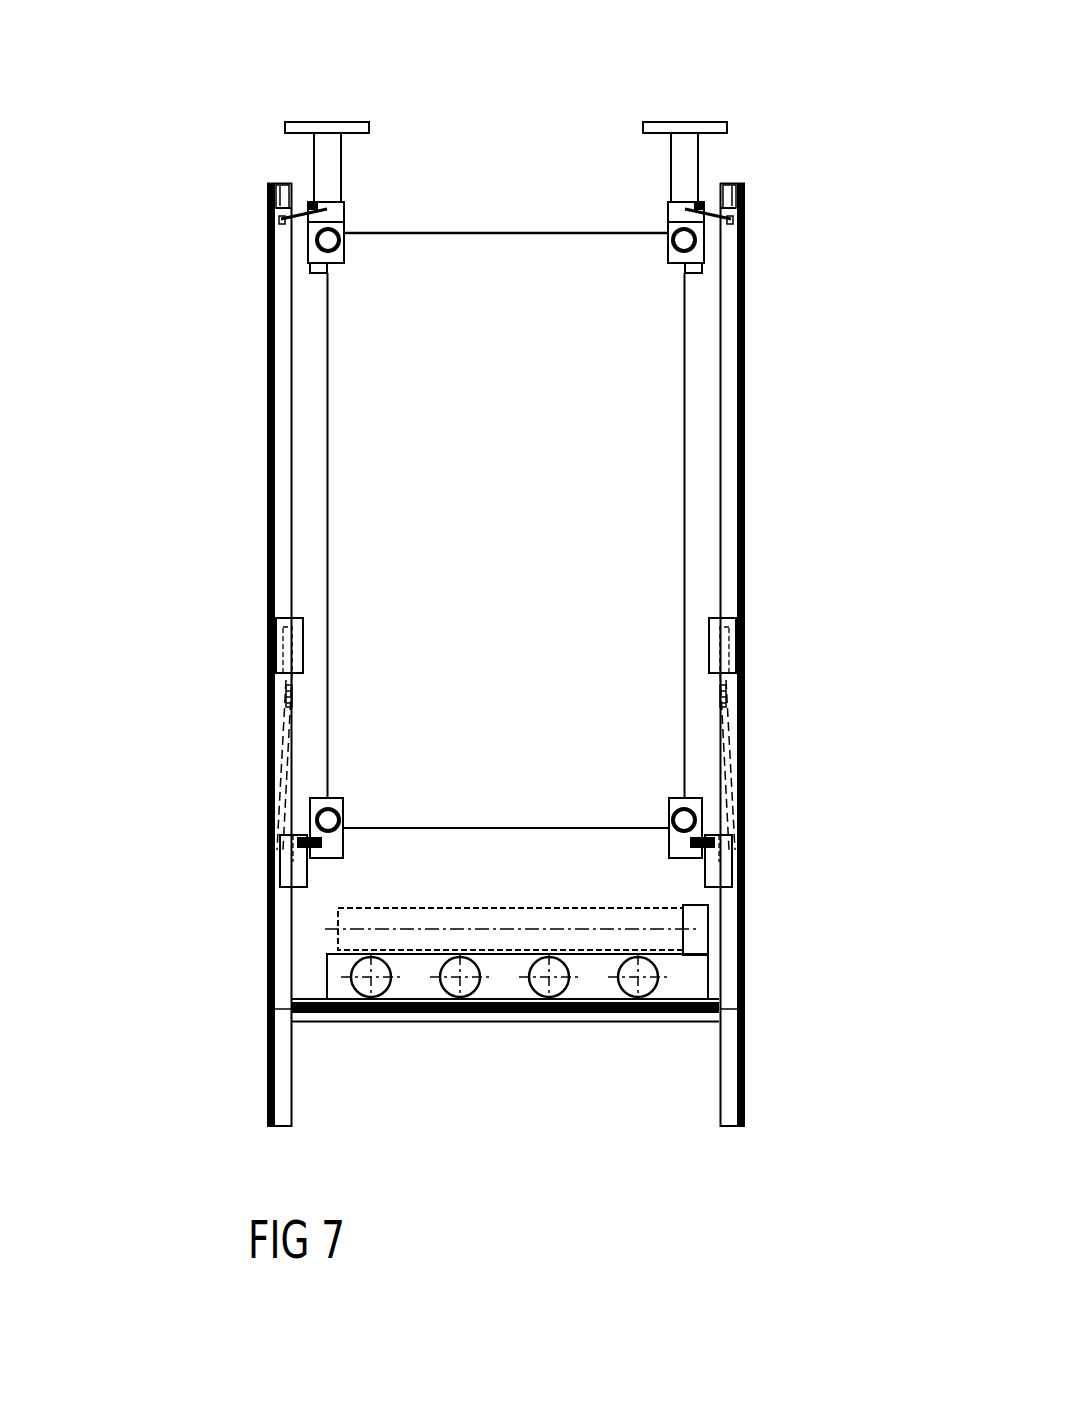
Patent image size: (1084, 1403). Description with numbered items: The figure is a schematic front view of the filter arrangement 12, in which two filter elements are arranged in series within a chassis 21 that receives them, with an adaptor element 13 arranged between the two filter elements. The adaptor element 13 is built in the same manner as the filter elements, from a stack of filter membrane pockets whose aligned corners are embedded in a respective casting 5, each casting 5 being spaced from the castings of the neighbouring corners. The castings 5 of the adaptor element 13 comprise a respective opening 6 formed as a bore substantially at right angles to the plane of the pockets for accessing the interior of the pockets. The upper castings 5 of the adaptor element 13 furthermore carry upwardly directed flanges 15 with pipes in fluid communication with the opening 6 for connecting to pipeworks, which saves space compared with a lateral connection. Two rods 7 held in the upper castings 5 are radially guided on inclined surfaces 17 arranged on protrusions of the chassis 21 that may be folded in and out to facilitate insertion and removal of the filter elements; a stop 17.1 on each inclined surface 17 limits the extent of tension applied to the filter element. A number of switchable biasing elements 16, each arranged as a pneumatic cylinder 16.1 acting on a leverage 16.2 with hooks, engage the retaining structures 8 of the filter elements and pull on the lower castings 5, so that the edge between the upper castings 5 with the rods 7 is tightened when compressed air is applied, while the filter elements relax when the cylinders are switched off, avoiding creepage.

The filter arrangement 12 is at (262, 106).
The adaptor element 13 is at (528, 226).
The upwardly directed flange 15 is at (333, 157).
The casting 5 is at (344, 262).
The opening 6 is at (322, 242).
The rod 7 is at (320, 207).
The retaining structure 8 is at (320, 843).
The inclined surface 17 is at (283, 220).
The stop 17.1 is at (303, 207).
The chassis 21 is at (277, 495).
The biasing element 16 is at (506, 761).
The pneumatic cylinder 16.1 is at (279, 645).
The leverage 16.2 is at (272, 808).